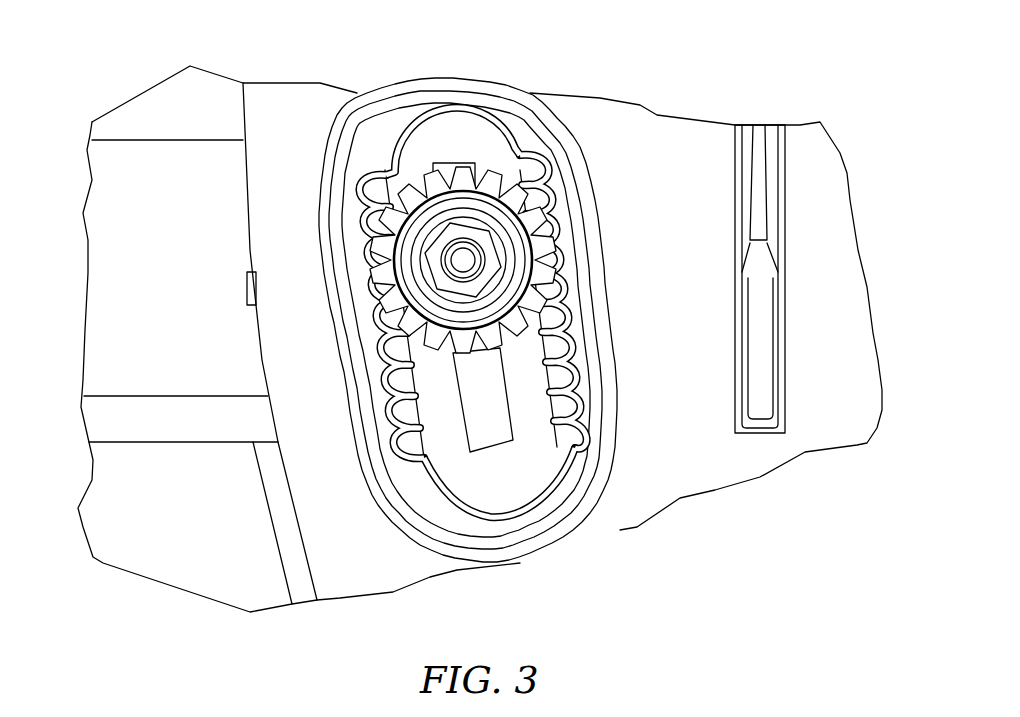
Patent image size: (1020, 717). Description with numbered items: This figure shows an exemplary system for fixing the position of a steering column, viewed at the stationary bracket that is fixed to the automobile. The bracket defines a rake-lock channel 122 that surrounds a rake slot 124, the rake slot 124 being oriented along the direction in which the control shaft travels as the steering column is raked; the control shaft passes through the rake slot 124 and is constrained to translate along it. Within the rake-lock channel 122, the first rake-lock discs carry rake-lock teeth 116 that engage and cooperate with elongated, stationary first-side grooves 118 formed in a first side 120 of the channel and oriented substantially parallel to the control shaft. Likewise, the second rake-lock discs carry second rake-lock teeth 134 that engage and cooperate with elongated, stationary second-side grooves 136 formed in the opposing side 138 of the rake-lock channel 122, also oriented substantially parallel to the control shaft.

The rake-lock teeth 116 is at (552, 232).
The first-side grooves 118 is at (582, 398).
The first side 120 is at (577, 457).
The rake-lock channel 122 is at (487, 135).
The rake slot 124 is at (443, 177).
The second rake-lock teeth 134 is at (358, 253).
The second-side grooves 136 is at (376, 350).
The opposing side 138 is at (413, 482).